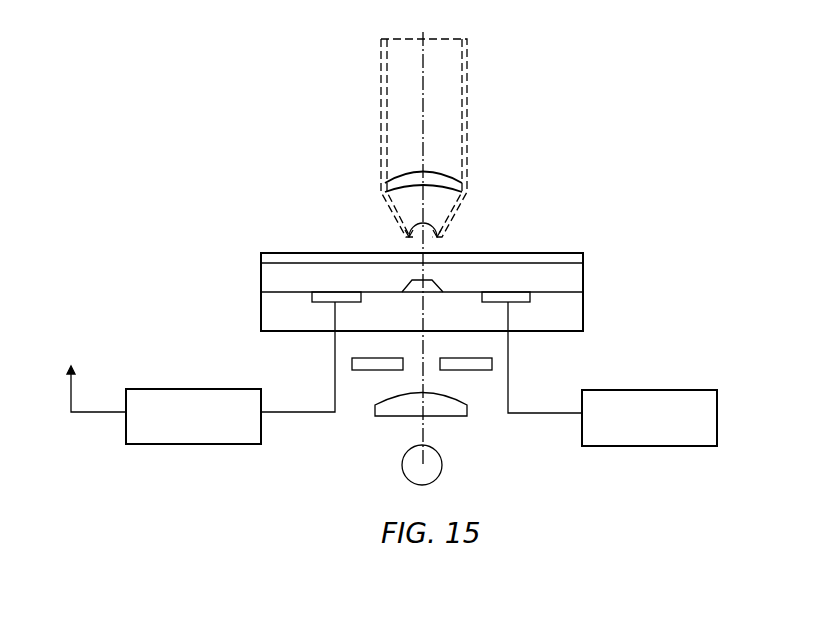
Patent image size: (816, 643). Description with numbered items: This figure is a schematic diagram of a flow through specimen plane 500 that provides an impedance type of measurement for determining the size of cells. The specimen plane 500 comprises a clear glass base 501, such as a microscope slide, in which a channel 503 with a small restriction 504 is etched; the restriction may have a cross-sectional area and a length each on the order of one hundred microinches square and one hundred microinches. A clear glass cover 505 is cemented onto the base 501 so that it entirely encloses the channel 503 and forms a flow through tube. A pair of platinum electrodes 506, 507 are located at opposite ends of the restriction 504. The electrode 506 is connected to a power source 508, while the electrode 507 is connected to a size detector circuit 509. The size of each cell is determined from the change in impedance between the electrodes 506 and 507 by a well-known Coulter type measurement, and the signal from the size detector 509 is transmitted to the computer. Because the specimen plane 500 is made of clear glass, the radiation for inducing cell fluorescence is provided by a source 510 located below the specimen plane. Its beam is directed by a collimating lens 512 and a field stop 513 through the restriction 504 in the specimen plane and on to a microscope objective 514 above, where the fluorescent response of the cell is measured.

The flow through specimen plane 500 is at (583, 297).
The clear glass base 501 is at (563, 331).
The channel 503 is at (560, 267).
The restriction 504 is at (432, 280).
The clear glass cover 505 is at (298, 253).
The platinum electrode 506 is at (520, 302).
The platinum electrode 507 is at (323, 302).
The power source 508 is at (682, 446).
The size detector circuit 509 is at (237, 444).
The source 510 is at (438, 468).
The collimating lens 512 is at (450, 416).
The field stop 513 is at (373, 370).
The microscope objective 514 is at (468, 120).